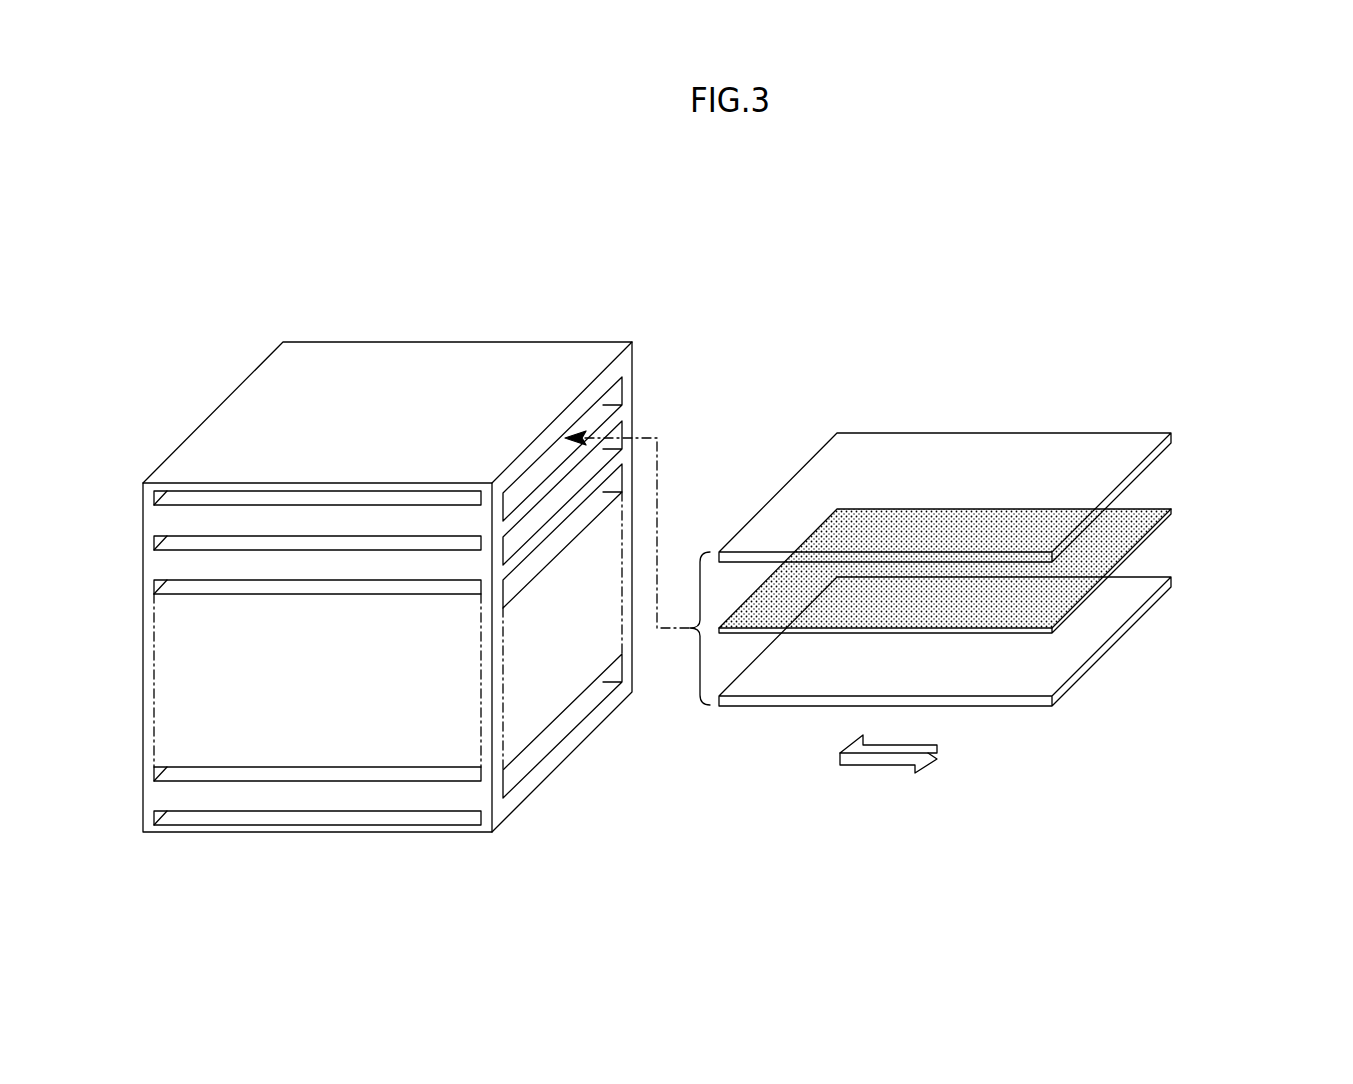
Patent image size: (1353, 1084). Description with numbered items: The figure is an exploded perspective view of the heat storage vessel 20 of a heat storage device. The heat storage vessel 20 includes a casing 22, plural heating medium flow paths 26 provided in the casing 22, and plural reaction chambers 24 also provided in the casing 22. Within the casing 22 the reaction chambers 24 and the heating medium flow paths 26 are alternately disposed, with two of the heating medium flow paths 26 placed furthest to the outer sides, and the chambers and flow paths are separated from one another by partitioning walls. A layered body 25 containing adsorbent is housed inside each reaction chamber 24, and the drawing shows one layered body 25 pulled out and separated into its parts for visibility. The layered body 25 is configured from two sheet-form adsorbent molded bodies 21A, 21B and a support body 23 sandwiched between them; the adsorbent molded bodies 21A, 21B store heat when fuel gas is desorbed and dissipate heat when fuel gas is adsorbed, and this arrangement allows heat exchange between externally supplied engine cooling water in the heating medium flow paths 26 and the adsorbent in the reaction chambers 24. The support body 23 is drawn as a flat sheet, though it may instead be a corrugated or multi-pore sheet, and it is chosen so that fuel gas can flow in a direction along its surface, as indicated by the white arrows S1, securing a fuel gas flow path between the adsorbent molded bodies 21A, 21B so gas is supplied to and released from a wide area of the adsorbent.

The heat storage vessel 20 is at (663, 231).
The casing 22 is at (328, 357).
The reaction chambers 24 is at (545, 465).
The heating medium flow paths 26 is at (198, 500).
The layered body 25 is at (1243, 393).
The adsorbent molded body 21A is at (1152, 432).
The support body 23 is at (1152, 506).
The adsorbent molded body 21B is at (1152, 578).
The white arrows S1 is at (855, 766).